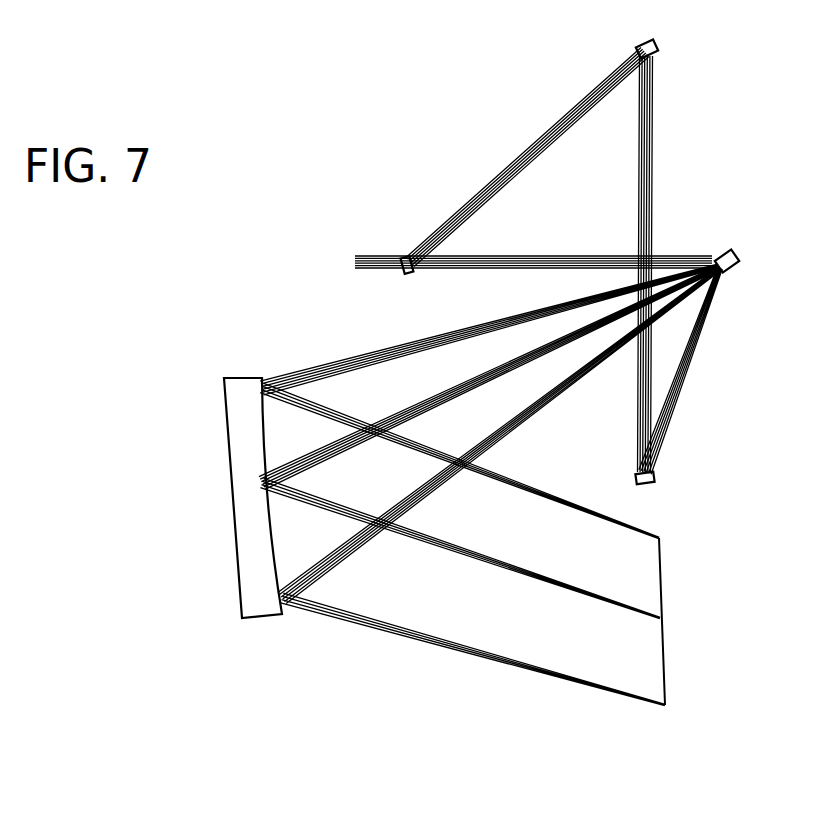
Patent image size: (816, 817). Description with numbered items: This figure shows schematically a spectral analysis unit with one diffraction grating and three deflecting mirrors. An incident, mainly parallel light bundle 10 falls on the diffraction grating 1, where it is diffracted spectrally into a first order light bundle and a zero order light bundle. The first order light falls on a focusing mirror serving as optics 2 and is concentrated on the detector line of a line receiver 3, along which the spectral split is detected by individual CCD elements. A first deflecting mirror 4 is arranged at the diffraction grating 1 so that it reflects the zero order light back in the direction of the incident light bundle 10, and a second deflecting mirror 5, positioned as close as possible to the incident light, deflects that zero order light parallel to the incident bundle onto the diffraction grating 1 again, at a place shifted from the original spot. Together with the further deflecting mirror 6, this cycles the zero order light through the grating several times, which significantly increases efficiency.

The diffraction grating 1 is at (738, 252).
The focusing mirror as optics 2 is at (236, 498).
The line receiver 3 is at (678, 621).
The first deflecting mirror 4 is at (659, 484).
The second deflecting mirror 5 is at (662, 65).
The deflecting mirror 6 is at (401, 244).
The incident light bundle 10 is at (507, 266).